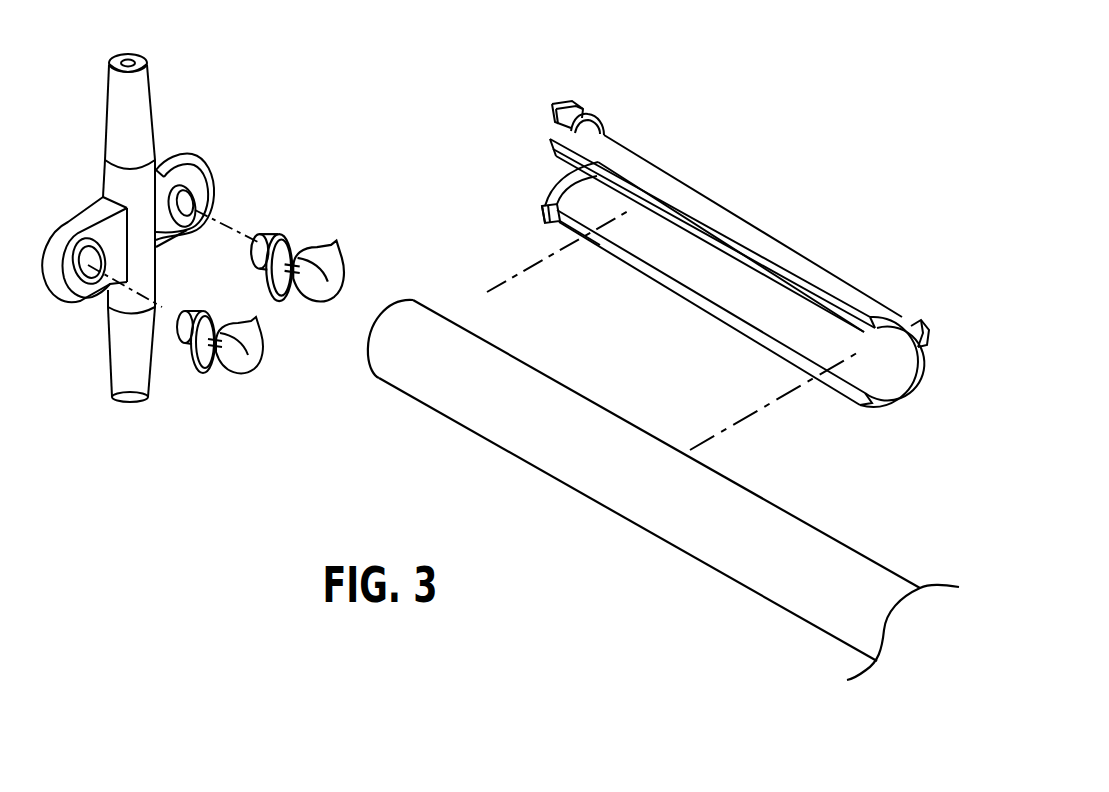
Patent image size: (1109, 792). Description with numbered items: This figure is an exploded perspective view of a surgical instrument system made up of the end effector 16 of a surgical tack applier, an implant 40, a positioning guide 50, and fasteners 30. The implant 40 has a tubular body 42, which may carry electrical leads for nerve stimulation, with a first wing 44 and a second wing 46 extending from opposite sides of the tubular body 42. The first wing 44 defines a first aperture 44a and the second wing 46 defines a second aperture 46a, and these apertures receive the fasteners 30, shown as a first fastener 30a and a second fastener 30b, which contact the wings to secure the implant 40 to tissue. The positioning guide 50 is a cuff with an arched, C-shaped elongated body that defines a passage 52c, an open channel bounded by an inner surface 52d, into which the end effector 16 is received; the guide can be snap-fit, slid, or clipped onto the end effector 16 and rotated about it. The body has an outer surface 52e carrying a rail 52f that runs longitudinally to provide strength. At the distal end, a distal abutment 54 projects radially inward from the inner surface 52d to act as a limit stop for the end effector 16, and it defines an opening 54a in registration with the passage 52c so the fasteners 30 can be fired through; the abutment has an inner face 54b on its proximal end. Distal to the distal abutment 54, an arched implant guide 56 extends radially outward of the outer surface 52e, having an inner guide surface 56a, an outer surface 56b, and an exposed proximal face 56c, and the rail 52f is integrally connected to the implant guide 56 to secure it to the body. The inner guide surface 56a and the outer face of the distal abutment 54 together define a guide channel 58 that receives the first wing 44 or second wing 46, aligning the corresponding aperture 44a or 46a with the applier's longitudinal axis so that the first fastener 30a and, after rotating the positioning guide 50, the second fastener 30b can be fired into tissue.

The end effector 16 is at (673, 530).
The fasteners 30 is at (280, 293).
The first fastener 30a is at (325, 270).
The second fastener 30b is at (235, 368).
The implant 40 is at (138, 97).
The tubular body 42 is at (112, 175).
The first wing 44 is at (57, 262).
The first aperture 44a is at (85, 270).
The second wing 46 is at (195, 170).
The second aperture 46a is at (183, 205).
The positioning guide 50 is at (722, 218).
The passage 52c is at (875, 365).
The inner surface 52d is at (722, 297).
The outer surface 52e is at (820, 278).
The rail 52f is at (915, 325).
The distal abutment 54 is at (546, 212).
The opening 54a is at (577, 198).
The inner face 54b is at (605, 178).
The implant guide 56 is at (560, 103).
The inner guide surface 56a is at (574, 177).
The outer surface 56b is at (594, 124).
The proximal face 56c is at (597, 130).
The guide channel 58 is at (548, 128).